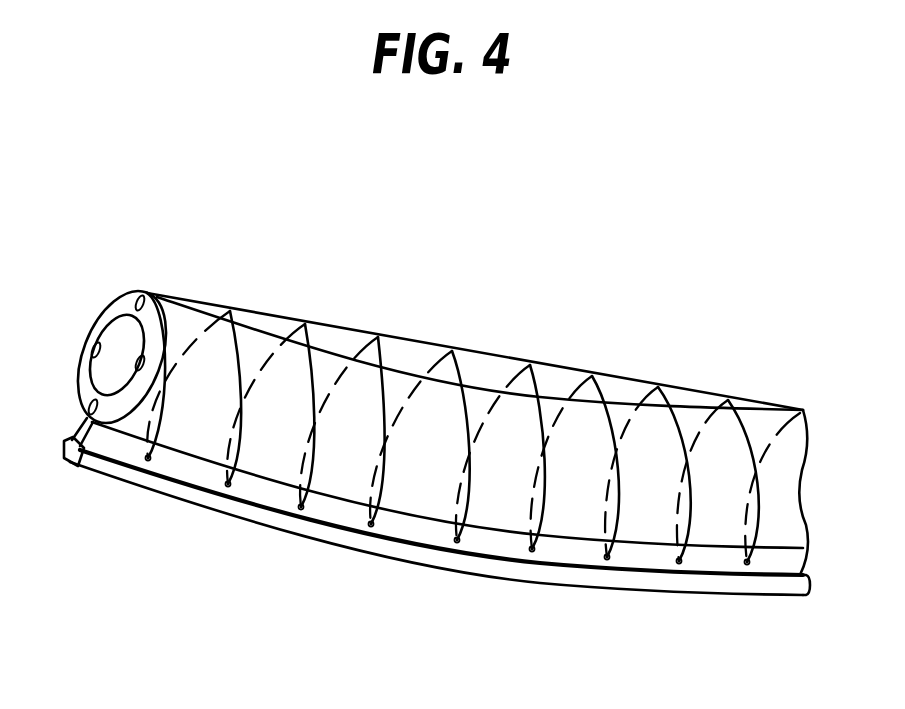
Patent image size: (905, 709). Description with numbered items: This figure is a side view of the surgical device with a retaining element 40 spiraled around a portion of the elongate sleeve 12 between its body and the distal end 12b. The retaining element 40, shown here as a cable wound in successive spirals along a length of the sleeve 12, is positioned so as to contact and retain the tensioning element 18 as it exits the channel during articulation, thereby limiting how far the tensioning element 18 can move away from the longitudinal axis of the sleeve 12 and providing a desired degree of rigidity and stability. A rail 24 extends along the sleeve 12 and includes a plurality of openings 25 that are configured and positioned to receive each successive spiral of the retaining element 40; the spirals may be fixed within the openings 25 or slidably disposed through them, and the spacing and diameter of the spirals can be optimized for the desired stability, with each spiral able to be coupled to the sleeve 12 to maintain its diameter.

The sleeve 12 is at (757, 430).
The distal end 12b is at (99, 292).
The tensioning element 18 is at (268, 315).
The rail 24 is at (565, 553).
The openings 25 is at (458, 542).
The retaining element 40 is at (387, 385).